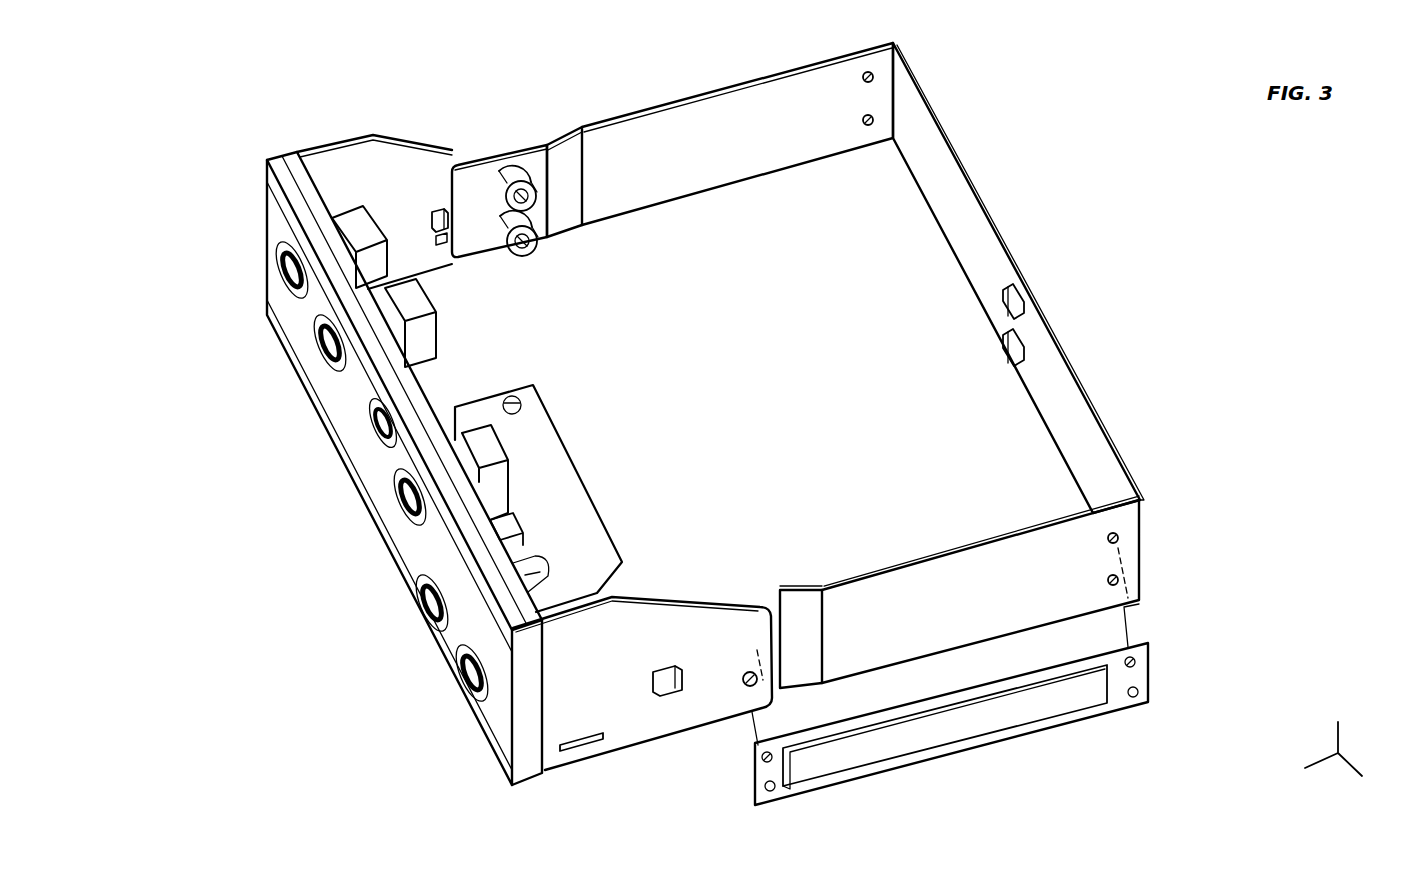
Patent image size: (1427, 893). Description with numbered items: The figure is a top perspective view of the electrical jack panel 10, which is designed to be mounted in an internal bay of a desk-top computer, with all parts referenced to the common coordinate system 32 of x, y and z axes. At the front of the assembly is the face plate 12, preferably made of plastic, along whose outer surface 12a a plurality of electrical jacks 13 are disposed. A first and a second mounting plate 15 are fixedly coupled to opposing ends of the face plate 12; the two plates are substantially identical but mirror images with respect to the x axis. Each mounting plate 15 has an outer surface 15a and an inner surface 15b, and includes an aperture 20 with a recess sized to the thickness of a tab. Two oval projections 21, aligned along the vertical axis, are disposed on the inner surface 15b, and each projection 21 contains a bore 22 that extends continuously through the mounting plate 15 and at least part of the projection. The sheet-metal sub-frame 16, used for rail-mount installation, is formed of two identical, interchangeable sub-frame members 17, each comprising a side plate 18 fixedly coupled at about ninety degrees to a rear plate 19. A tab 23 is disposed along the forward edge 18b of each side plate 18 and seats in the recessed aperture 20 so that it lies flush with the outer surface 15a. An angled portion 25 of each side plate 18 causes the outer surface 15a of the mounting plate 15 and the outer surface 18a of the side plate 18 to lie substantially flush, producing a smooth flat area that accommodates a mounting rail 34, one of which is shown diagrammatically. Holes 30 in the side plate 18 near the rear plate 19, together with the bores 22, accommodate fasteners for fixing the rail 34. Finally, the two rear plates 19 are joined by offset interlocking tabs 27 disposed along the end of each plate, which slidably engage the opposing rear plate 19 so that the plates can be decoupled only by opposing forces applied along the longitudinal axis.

The jack panel 10 is at (235, 461).
The face plate 12 is at (444, 468).
The outer surface 12a is at (498, 718).
The electrical jacks 13 is at (428, 602).
The mounting plate 15 is at (534, 425).
The outer surface 15a is at (642, 683).
The inner surface 15b is at (374, 212).
The sub-frame 16 is at (859, 361).
The sub-frame members 17 is at (839, 170).
The side plate 18 is at (698, 86).
The outer surface 18a is at (980, 589).
The forward edge 18b is at (453, 166).
The rear plate 19 is at (986, 184).
The aperture 20 is at (446, 228).
The projections 21 is at (534, 232).
The bore 22 is at (518, 256).
The tab 23 is at (436, 211).
The angled portion 25 is at (572, 128).
The interlocking tabs 27 is at (1005, 362).
The holes 30 is at (864, 80).
The coordinate system 32 is at (1362, 735).
The mounting rail 34 is at (1068, 744).